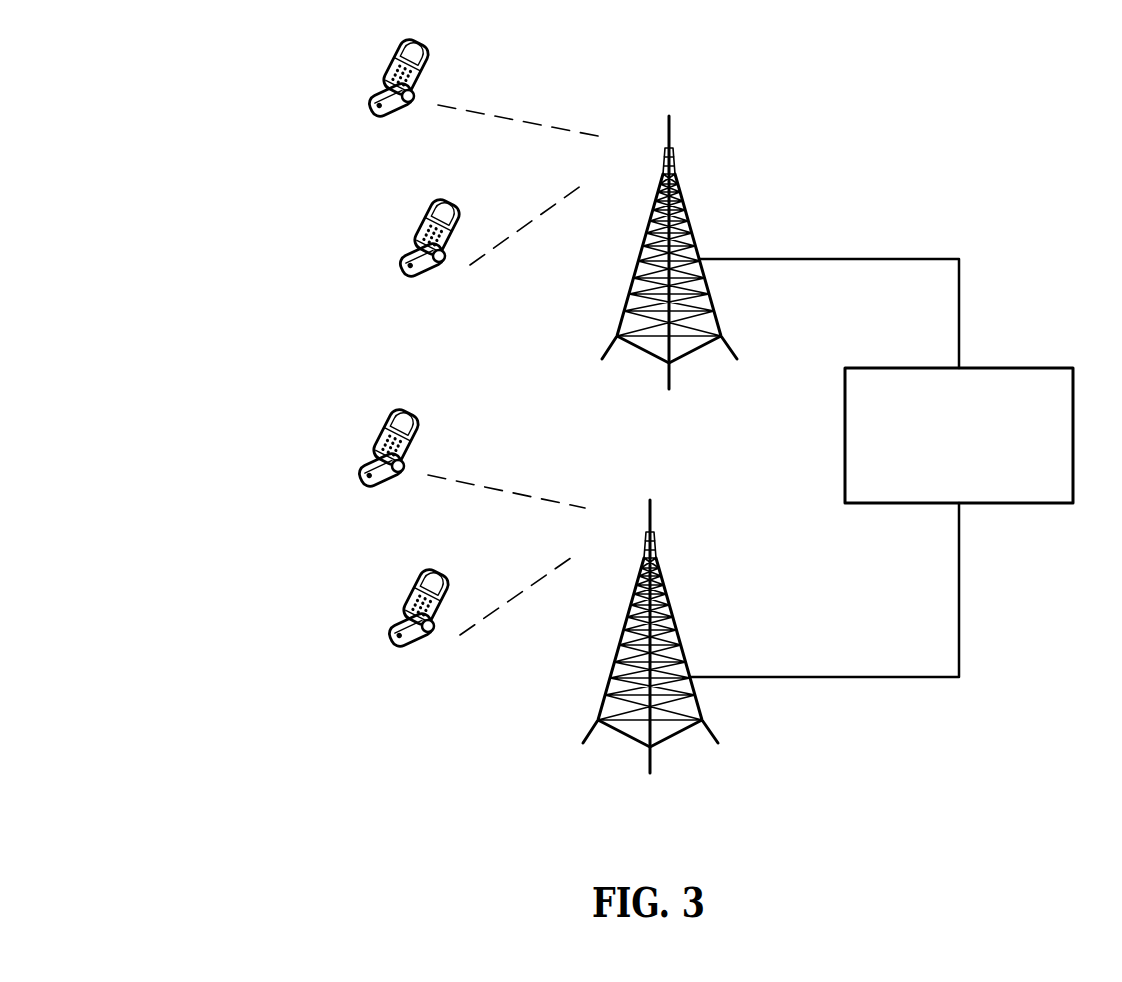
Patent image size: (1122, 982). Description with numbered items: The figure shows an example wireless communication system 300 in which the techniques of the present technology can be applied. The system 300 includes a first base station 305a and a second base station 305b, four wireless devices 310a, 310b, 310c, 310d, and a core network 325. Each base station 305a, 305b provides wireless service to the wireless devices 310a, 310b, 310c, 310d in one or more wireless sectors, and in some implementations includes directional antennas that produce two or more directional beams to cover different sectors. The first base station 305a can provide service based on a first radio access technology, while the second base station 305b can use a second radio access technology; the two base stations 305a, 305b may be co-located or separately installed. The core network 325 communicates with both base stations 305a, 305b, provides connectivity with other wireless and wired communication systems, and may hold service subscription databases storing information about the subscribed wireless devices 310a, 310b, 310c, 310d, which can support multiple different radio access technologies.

The wireless communication system 300 is at (221, 168).
The wireless device 310a is at (484, 75).
The wireless device 310b is at (491, 218).
The wireless device 310c is at (470, 443).
The wireless device 310d is at (480, 592).
The first base station 305a is at (691, 257).
The second base station 305b is at (673, 648).
The core network 325 is at (881, 468).